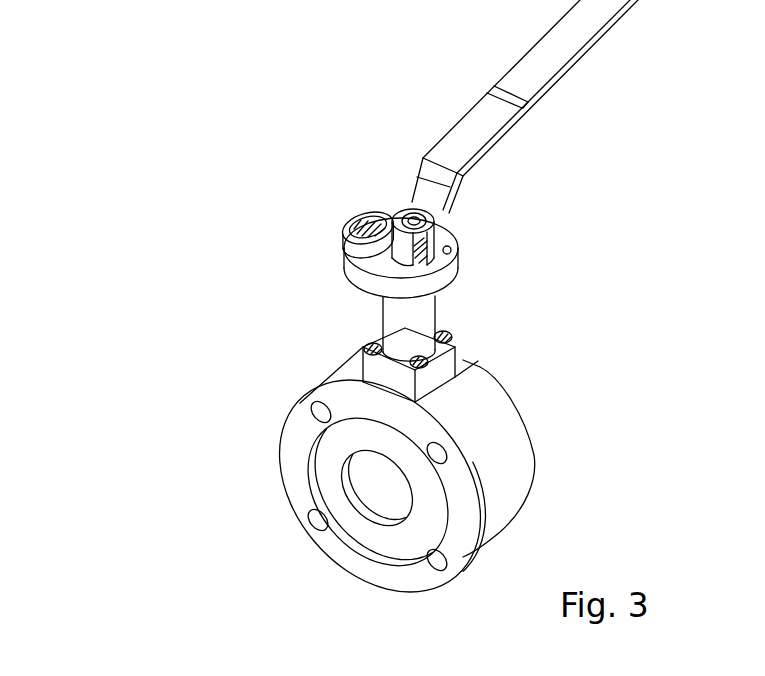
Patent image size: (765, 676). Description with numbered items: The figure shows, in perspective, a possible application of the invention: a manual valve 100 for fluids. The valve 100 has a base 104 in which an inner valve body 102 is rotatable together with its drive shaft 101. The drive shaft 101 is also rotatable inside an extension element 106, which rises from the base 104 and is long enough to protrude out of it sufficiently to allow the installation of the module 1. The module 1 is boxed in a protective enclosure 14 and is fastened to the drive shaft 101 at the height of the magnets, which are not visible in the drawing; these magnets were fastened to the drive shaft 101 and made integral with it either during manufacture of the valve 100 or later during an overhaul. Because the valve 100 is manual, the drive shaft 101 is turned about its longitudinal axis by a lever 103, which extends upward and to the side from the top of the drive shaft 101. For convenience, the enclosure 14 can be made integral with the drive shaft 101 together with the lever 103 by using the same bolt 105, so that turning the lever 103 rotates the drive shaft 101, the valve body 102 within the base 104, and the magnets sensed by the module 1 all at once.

The valve 100 is at (203, 412).
The module 1 is at (347, 222).
The protective enclosure 14 is at (378, 213).
The drive shaft 101 is at (437, 204).
The valve body 102 is at (378, 487).
The lever 103 is at (483, 126).
The base 104 is at (517, 448).
The bolt 105 is at (397, 218).
The extension element 106 is at (420, 317).